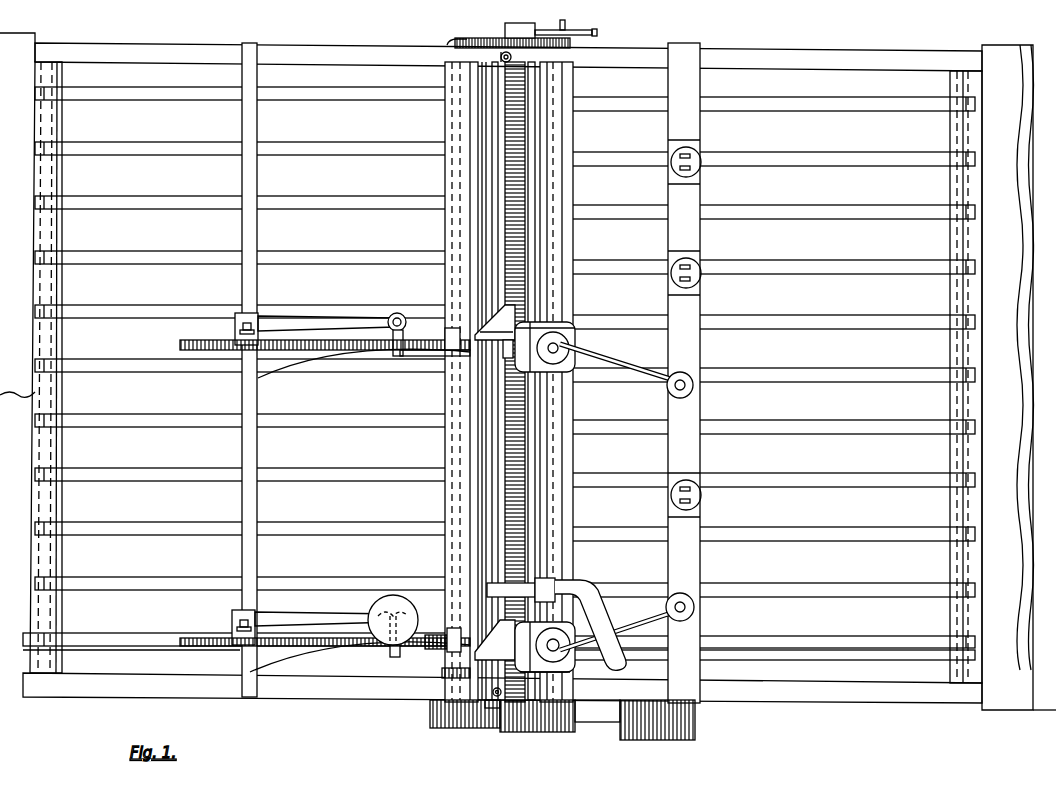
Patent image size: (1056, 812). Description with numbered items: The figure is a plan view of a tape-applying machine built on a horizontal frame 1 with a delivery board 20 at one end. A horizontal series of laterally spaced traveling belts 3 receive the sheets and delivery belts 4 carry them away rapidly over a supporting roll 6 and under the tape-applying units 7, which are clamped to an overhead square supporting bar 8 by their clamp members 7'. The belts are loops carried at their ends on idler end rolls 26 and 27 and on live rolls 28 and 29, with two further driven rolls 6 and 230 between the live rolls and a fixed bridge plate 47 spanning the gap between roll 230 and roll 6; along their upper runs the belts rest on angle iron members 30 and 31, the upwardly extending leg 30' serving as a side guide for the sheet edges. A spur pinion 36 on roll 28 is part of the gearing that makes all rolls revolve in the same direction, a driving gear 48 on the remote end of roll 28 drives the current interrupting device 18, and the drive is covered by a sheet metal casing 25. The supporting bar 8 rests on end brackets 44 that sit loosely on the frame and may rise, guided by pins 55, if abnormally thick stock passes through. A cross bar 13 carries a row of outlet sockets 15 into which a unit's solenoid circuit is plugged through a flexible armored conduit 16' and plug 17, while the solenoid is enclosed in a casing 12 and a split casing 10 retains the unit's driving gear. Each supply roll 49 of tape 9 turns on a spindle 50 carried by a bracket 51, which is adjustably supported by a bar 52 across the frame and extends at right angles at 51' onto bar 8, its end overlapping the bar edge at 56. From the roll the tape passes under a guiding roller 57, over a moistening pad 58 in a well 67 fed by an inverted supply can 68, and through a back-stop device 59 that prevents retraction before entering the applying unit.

The frame 1 is at (816, 706).
The traveling belts 3 is at (147, 162).
The delivery belts 4 is at (862, 168).
The supporting roll 6 is at (535, 238).
The tape-applying unit 7 is at (567, 500).
The clamp members 7' is at (495, 479).
The supporting bar 8 is at (525, 180).
The adhesive tape 9 is at (344, 357).
The split casing 10 is at (487, 590).
The casing 12 is at (645, 14).
The cross bar 13 is at (700, 451).
The outlet sockets 15 is at (698, 168).
The flexible armored conduit 16' is at (620, 495).
The plug 17 is at (700, 378).
The solenoid current interrupting device 18 is at (492, 32).
The delivery board 20 is at (1038, 711).
The sheet metal casing 25 is at (608, 718).
The idler end roll 26 is at (52, 447).
The idler end roll 27 is at (950, 402).
The live roll 28 is at (450, 450).
The live roll 29 is at (570, 450).
The angle iron member 30 is at (250, 627).
The upwardly extending leg 30' is at (131, 660).
The angle iron member 31 is at (828, 640).
The spur pinion 36 is at (442, 673).
The end brackets 44 is at (492, 708).
The bridge plate 47 is at (498, 130).
The driving gear 48 is at (447, 45).
The supply roll 49 is at (180, 345).
The spindle 50 is at (250, 322).
The bracket 51 is at (325, 457).
The right-angle extension of bracket 51' is at (564, 314).
The bar 52 is at (255, 449).
The pins 55 is at (512, 57).
The overlapping end of bracket 56 is at (558, 672).
The guiding roller 57 is at (398, 357).
The moistening pad 58 is at (410, 318).
The back-stop device 59 is at (450, 328).
The well 67 is at (428, 357).
The supply can 68 is at (368, 612).
The driven roll 230 is at (482, 238).